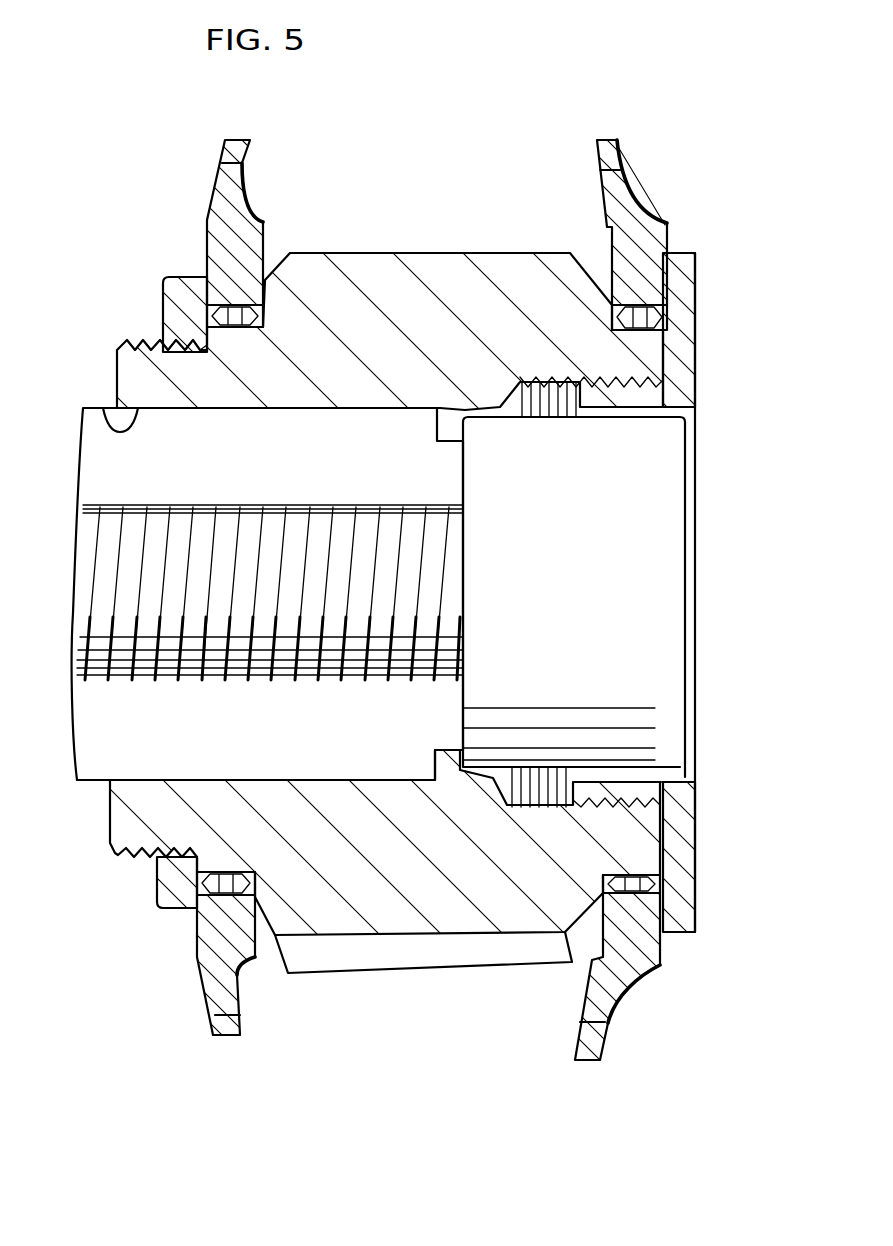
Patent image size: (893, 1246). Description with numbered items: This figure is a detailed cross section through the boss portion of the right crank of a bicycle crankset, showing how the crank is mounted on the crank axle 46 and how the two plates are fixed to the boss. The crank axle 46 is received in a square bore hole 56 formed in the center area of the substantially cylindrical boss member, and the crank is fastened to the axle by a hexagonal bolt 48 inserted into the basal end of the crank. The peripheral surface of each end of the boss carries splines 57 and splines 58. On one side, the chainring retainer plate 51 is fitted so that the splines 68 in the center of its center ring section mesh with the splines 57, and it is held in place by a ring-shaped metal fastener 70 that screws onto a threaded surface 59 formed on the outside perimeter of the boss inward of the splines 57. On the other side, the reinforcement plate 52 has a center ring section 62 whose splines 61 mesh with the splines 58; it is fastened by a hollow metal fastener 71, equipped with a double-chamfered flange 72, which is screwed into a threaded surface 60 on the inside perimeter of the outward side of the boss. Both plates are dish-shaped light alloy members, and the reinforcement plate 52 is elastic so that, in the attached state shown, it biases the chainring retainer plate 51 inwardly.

The crank axle 46 is at (85, 490).
The hexagonal bolt 48 is at (658, 633).
The chainring retainer plate 51 is at (245, 232).
The reinforcement plate 52 is at (610, 198).
The square bore hole 56 is at (105, 407).
The splines 57 is at (245, 320).
The splines 58 is at (628, 325).
The threaded surface 59 is at (142, 343).
The threaded surface 60 is at (562, 402).
The splines 61 is at (643, 317).
The center ring section 62 is at (643, 227).
The splines 68 is at (272, 350).
The ring-shaped metal fastener 70 is at (188, 287).
The hollow metal fastener 71 is at (685, 373).
The double-chamfered flange 72 is at (690, 275).